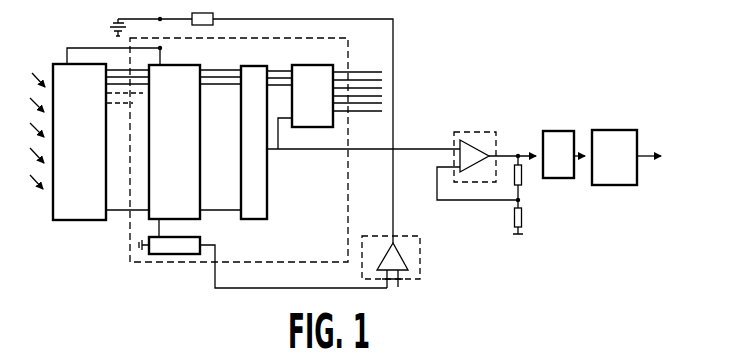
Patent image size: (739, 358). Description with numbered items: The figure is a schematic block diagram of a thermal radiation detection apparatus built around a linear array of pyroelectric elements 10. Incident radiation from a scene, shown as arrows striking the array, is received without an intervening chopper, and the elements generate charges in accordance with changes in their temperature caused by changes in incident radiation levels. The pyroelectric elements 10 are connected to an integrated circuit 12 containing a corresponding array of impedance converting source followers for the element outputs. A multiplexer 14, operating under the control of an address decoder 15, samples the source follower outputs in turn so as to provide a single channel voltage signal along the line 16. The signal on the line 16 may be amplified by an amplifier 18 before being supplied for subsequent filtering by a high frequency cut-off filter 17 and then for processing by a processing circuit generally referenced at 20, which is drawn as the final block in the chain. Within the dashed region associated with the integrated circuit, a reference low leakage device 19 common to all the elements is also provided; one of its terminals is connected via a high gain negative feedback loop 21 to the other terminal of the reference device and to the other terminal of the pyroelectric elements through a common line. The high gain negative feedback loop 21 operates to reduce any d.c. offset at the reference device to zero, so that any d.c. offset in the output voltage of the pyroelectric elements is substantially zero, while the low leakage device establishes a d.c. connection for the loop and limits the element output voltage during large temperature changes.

The pyroelectric elements 10 is at (87, 145).
The integrated circuit 12 is at (183, 145).
The multiplexer 14 is at (261, 146).
The address decoder 15 is at (320, 107).
The line 16 is at (413, 152).
The high frequency cut-off filter 17 is at (560, 131).
The amplifier 18 is at (480, 132).
The reference low leakage device 19 is at (179, 257).
The processing circuit 20 is at (610, 130).
The high gain negative feedback loop 21 is at (422, 263).